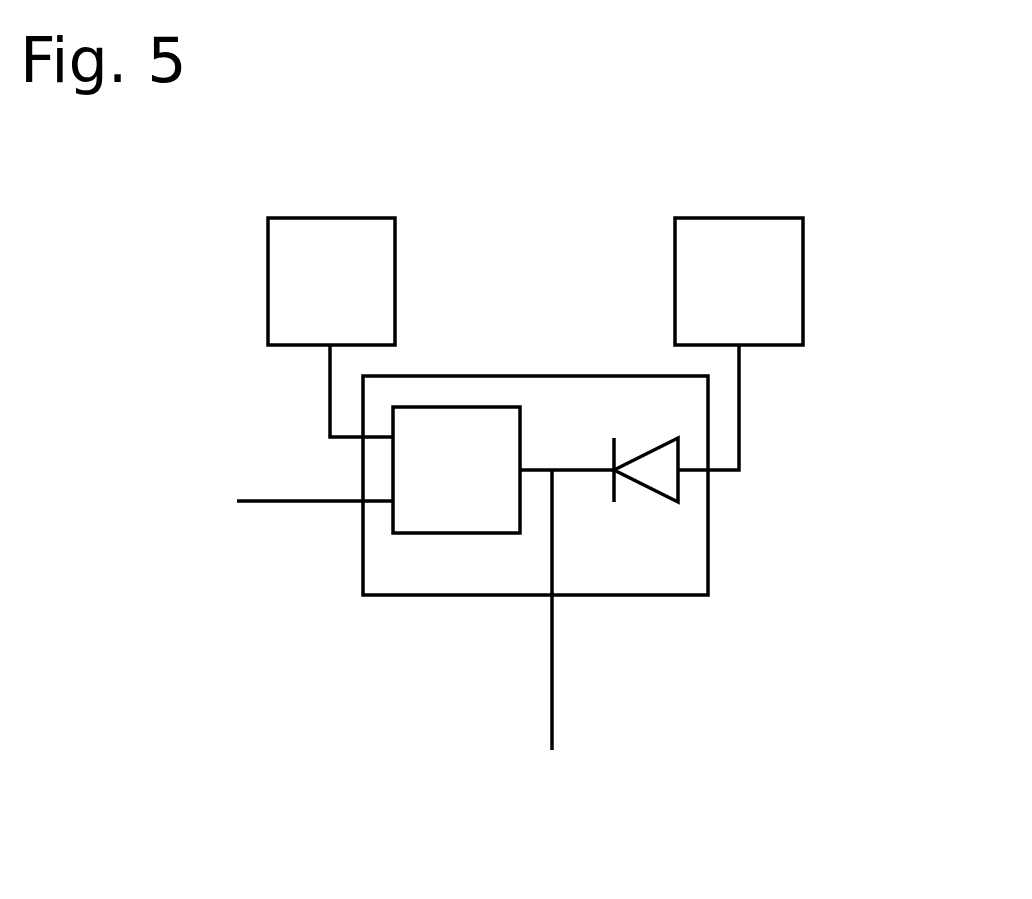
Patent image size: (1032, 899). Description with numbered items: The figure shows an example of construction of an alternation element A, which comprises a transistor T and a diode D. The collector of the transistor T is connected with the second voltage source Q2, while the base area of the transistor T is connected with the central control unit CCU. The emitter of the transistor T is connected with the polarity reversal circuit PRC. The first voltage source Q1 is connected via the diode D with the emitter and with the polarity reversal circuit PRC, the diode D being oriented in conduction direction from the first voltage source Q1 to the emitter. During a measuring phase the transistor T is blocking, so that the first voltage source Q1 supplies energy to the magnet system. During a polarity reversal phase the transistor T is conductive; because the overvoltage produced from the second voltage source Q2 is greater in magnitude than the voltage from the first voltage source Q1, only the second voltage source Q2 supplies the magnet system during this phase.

The alternation element A is at (708, 595).
The diode D is at (660, 469).
The transistor T is at (503, 470).
The first voltage source Q1 is at (739, 344).
The second voltage source Q2 is at (331, 327).
The central control unit CCU is at (286, 463).
The polarity reversal circuit PRC is at (468, 617).